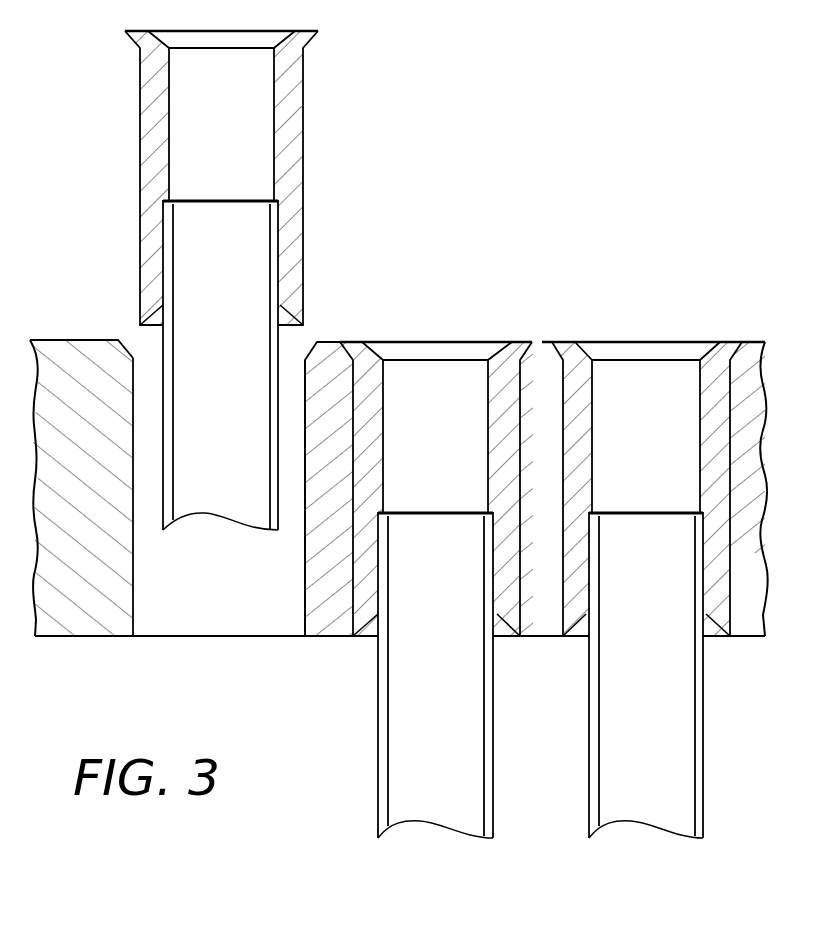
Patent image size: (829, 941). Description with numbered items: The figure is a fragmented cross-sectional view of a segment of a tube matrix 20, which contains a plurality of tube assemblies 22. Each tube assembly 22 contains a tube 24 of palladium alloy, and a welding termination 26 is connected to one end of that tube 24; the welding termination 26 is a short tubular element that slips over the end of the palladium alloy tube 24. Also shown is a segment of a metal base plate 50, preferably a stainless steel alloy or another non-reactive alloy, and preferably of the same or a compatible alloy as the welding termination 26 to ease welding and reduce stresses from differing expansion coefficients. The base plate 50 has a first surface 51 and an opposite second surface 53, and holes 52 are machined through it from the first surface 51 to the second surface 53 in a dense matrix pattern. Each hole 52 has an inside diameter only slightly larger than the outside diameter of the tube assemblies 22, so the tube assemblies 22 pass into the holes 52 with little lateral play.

The tube matrix 20 is at (578, 288).
The tube assembly 22 is at (140, 140).
The tube 24 is at (273, 362).
The welding termination 26 is at (293, 153).
The base plate 50 is at (105, 373).
The first surface 51 is at (76, 340).
The hole 52 is at (238, 592).
The second surface 53 is at (87, 637).